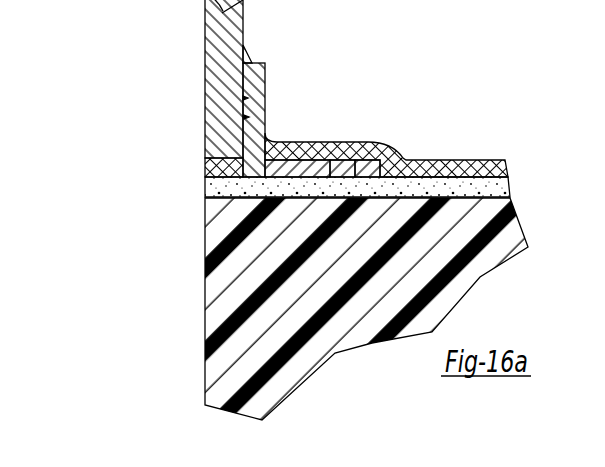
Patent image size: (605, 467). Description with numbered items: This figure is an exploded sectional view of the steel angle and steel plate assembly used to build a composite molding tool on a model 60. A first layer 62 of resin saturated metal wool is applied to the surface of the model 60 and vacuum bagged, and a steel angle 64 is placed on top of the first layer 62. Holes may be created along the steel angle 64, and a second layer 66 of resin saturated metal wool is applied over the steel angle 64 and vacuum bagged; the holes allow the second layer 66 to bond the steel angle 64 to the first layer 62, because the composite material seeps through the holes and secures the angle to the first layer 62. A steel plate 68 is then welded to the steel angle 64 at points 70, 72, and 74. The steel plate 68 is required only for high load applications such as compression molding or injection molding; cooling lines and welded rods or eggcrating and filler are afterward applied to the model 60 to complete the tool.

The model 60 is at (140, 235).
The first layer 62 is at (205, 186).
The steel angle 64 is at (263, 82).
The second layer 66 is at (412, 165).
The steel plate 68 is at (222, 93).
The weld point 70 is at (247, 50).
The weld point 72 is at (246, 98).
The weld point 74 is at (248, 117).